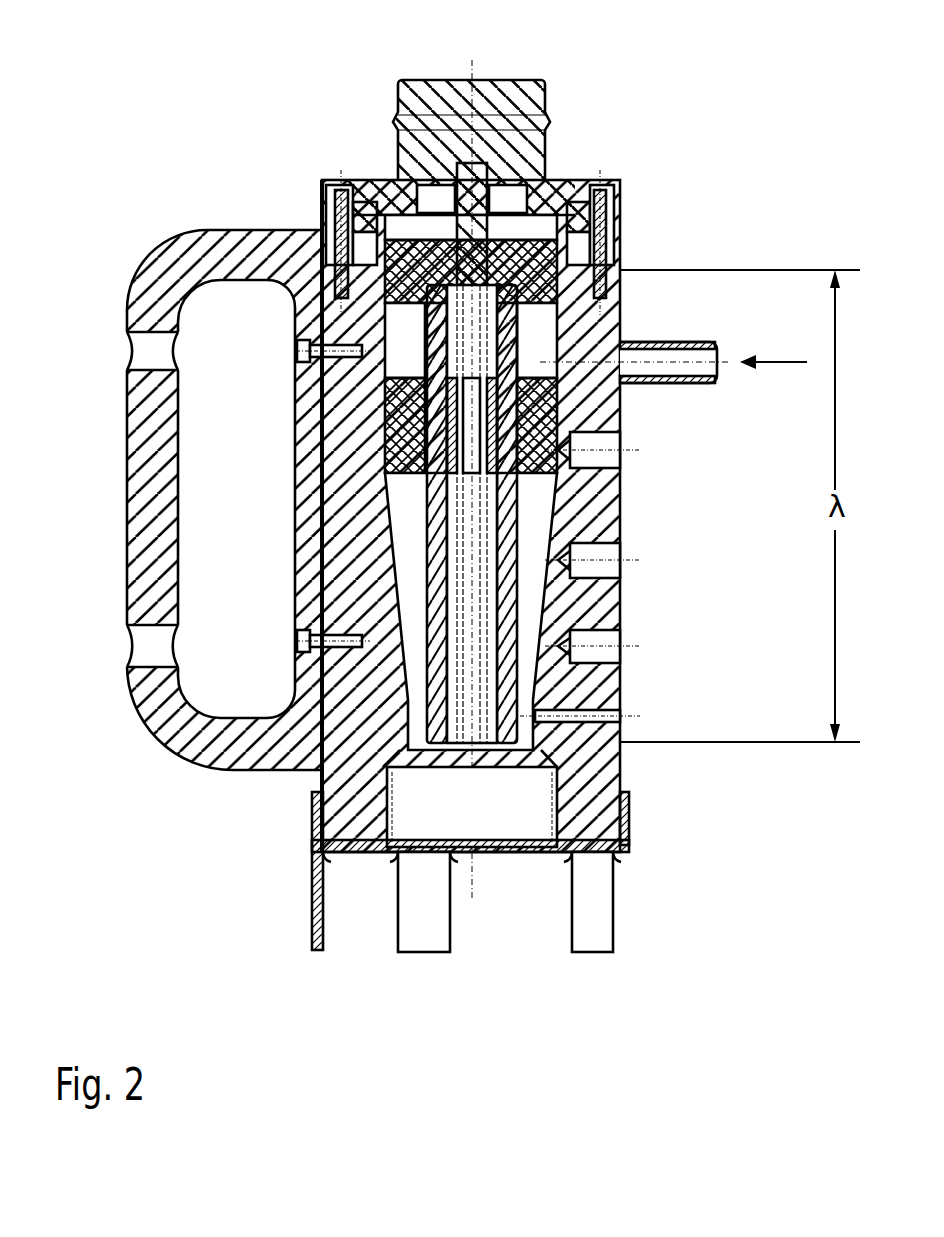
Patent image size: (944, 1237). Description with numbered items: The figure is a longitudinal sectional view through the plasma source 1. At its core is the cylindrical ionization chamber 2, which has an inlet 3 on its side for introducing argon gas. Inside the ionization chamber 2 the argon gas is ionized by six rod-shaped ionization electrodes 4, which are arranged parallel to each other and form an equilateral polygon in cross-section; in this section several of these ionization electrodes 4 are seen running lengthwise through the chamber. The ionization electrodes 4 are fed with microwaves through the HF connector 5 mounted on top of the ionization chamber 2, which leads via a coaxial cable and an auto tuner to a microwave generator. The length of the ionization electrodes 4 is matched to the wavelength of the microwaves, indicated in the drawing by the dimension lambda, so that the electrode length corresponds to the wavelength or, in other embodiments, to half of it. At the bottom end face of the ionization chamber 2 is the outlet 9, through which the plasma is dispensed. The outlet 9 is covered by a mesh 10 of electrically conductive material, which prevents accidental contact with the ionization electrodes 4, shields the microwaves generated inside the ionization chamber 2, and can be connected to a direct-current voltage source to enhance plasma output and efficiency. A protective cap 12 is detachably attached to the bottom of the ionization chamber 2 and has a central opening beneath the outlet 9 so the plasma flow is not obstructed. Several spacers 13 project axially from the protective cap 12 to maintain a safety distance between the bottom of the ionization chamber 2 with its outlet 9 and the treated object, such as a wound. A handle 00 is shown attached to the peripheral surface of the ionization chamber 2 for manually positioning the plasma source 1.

The plasma source 1 is at (256, 142).
The handle 00 is at (140, 475).
The ionization chamber 2 is at (598, 602).
The inlet 3 is at (672, 342).
The ionization electrodes 4 is at (505, 645).
The HF connector 5 is at (492, 105).
The outlet 9 is at (437, 815).
The mesh 10 is at (510, 850).
The protective cap 12 is at (630, 815).
The spacers 13 is at (305, 940).